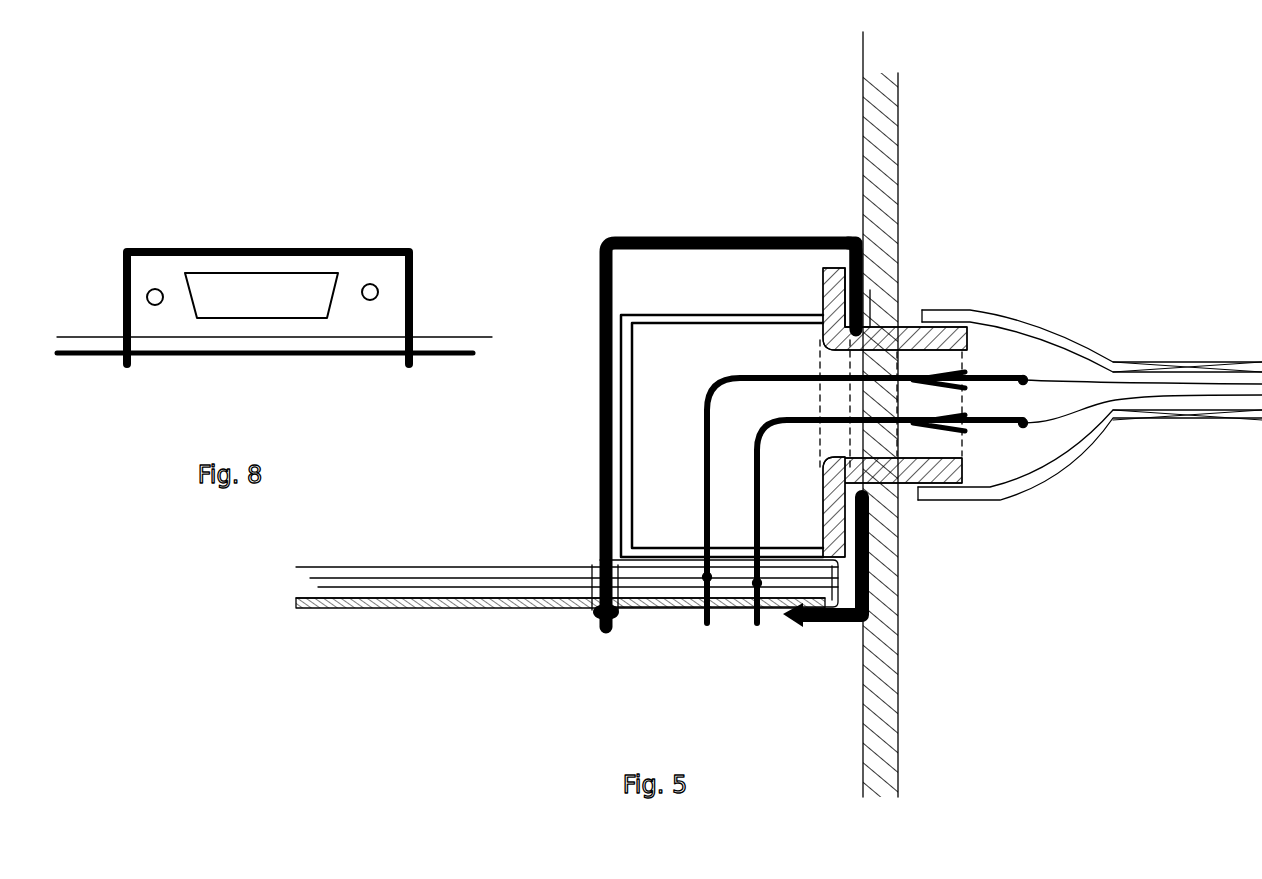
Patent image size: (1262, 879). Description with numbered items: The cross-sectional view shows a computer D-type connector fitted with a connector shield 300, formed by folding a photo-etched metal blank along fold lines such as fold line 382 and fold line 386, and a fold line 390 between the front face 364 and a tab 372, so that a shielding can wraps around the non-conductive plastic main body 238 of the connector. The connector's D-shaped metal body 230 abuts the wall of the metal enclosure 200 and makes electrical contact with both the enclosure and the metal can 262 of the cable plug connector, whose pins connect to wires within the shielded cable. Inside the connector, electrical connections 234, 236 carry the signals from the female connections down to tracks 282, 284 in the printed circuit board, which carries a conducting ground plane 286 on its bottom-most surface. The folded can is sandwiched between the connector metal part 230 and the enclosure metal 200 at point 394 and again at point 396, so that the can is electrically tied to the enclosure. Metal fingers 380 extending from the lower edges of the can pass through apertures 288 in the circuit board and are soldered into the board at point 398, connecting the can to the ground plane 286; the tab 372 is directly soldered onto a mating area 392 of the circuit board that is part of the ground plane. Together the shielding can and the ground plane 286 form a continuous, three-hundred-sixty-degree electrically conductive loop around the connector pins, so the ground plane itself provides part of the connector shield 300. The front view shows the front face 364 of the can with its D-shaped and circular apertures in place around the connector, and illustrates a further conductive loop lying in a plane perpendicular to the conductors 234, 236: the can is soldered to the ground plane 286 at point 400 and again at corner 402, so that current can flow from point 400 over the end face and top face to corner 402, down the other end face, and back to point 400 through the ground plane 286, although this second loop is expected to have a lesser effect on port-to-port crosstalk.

In FIG. 5, the metal enclosure 200 is at (893, 162).
In FIG. 5, the metal body 230 is at (822, 283).
In FIG. 5, the electrical connection 234 is at (750, 375).
In FIG. 5, the electrical connection 236 is at (803, 428).
In FIG. 5, the main body 238 is at (700, 313).
In FIG. 5, the metal can 262 is at (1090, 391).
In FIG. 5, the track 282 is at (333, 565).
In FIG. 5, the track 284 is at (385, 588).
In FIG. 8, the ground plane 286 is at (277, 355).
In FIG. 5, the ground plane 286 is at (480, 608).
In FIG. 5, the apertures 288 is at (553, 588).
In FIG. 5, the connector shield 300 is at (689, 400).
In FIG. 8, the front face 364 is at (270, 258).
In FIG. 5, the tab 372 is at (818, 627).
In FIG. 5, the metal fingers 380 is at (598, 620).
In FIG. 5, the fold line 382 is at (858, 232).
In FIG. 5, the fold line 386 is at (602, 247).
In FIG. 5, the fold line 390 is at (857, 627).
In FIG. 5, the mating area 392 is at (783, 622).
In FIG. 5, the point 394 is at (865, 277).
In FIG. 5, the point 396 is at (863, 533).
In FIG. 5, the point 398 is at (615, 622).
In FIG. 8, the point 400 is at (127, 366).
In FIG. 8, the corner 402 is at (407, 366).